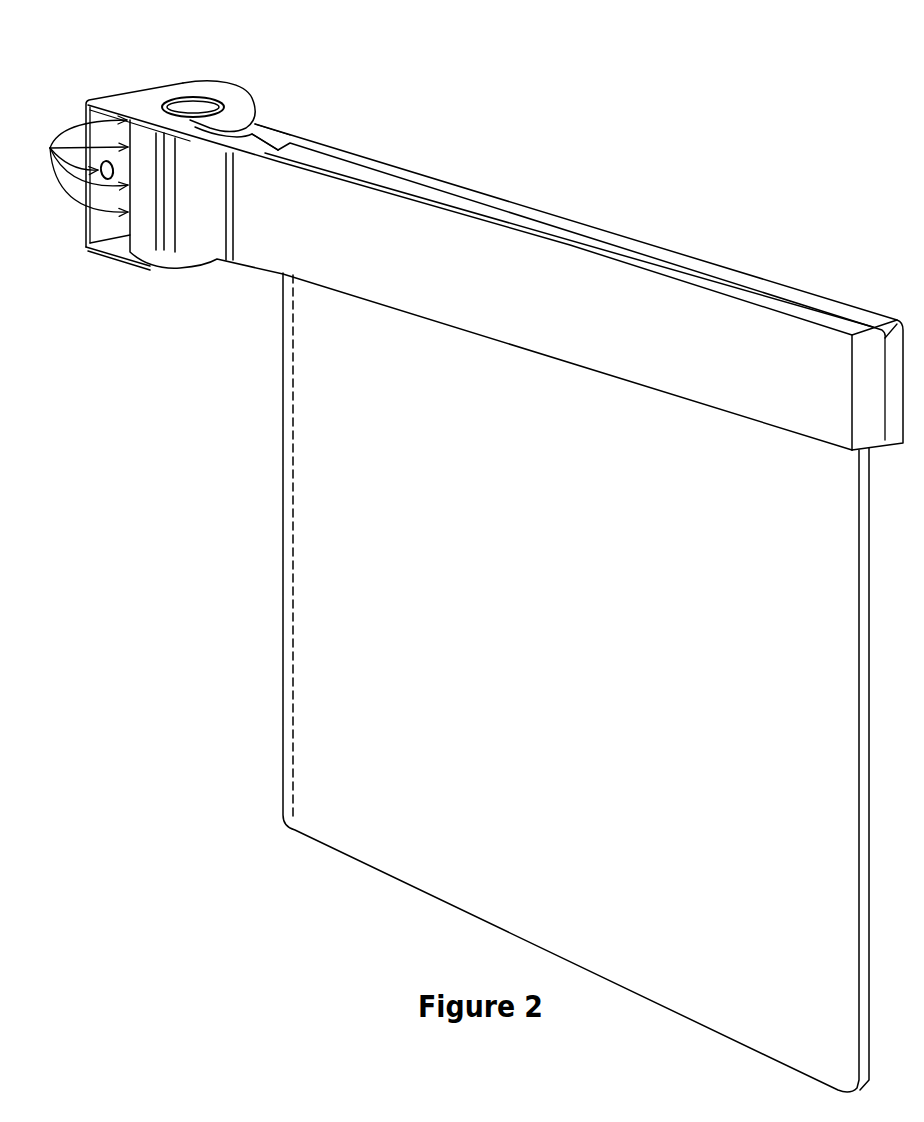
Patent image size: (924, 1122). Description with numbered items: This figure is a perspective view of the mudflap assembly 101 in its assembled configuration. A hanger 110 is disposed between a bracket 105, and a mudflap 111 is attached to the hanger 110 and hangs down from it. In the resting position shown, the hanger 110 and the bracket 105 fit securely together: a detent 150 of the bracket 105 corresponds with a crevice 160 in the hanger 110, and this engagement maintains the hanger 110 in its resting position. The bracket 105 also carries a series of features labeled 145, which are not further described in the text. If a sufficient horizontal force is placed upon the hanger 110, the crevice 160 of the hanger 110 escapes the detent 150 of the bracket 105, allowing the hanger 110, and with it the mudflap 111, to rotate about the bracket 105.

The mudflap assembly 101 is at (603, 120).
The bracket 105 is at (145, 86).
The hanger 110 is at (277, 238).
The mudflap 111 is at (332, 585).
The mounting holes 145 is at (70, 166).
The detent 150 is at (231, 126).
The crevice 160 is at (268, 136).